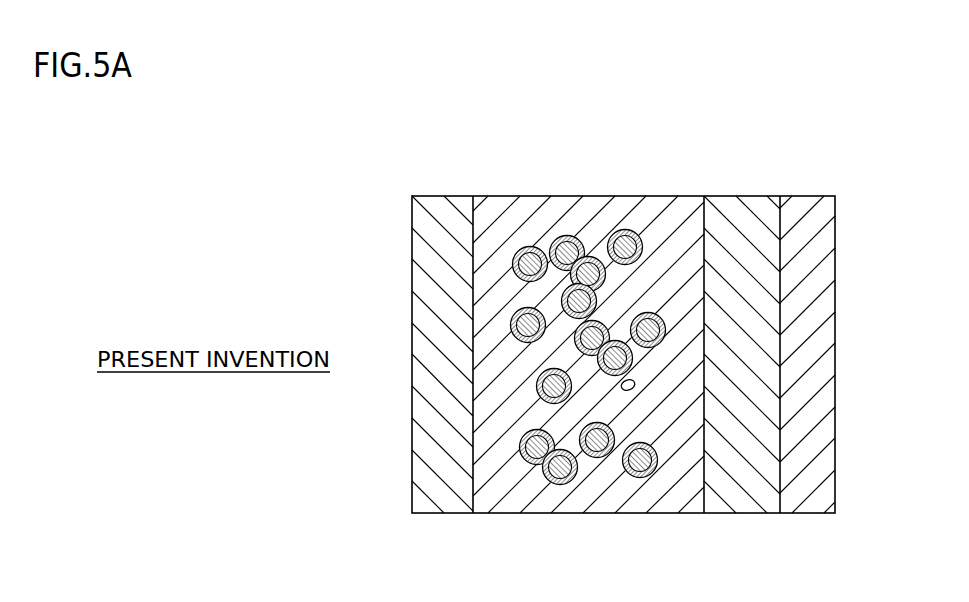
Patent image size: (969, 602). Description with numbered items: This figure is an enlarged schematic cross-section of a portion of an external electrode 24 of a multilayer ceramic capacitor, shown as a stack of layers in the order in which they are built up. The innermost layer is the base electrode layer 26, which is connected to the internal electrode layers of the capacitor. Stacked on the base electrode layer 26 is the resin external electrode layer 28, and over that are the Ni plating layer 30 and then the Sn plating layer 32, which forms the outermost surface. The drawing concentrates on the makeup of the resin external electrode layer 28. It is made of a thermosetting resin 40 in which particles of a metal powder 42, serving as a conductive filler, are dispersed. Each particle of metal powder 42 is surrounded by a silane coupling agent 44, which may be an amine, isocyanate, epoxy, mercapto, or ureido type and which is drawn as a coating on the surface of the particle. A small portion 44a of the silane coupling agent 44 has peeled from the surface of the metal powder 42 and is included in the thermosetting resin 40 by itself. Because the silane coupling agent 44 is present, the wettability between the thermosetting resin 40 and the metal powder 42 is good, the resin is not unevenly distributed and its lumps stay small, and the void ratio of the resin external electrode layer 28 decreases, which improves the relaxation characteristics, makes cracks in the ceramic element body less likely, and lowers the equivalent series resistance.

The external electrode 24 is at (835, 142).
The base electrode layer 26 is at (473, 193).
The resin external electrode layer 28 is at (474, 193).
The Ni plating layer 30 is at (780, 193).
The Sn plating layer 32 is at (781, 193).
The thermosetting resin 40 is at (482, 300).
The metal powder 42 is at (553, 387).
The silane coupling agent 44 is at (630, 397).
The portion of the silane coupling agent 44a is at (636, 384).